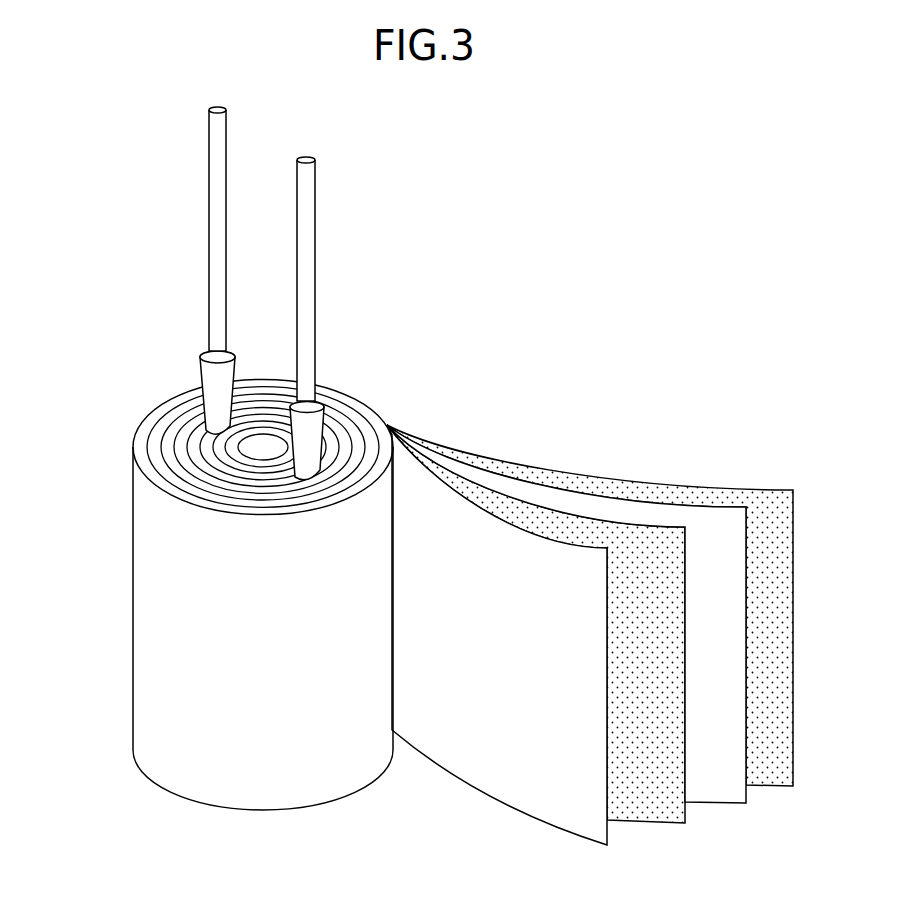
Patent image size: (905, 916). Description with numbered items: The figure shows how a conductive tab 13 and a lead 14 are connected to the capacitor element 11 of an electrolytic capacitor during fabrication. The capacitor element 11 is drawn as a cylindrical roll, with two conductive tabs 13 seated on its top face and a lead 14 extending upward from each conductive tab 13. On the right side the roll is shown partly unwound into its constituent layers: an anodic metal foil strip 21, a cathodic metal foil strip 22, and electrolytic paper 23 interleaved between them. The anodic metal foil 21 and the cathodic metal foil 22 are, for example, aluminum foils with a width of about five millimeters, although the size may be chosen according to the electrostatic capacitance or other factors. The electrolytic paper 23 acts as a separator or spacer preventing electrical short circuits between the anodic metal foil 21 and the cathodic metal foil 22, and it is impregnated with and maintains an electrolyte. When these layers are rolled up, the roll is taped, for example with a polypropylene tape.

The capacitor element 11 is at (126, 587).
The conductive tab 13 is at (208, 380).
The lead 14 is at (216, 156).
The anodic metal foil strip 21 is at (560, 818).
The cathodic metal foil strip 22 is at (730, 798).
The electrolytic paper 23 is at (645, 538).